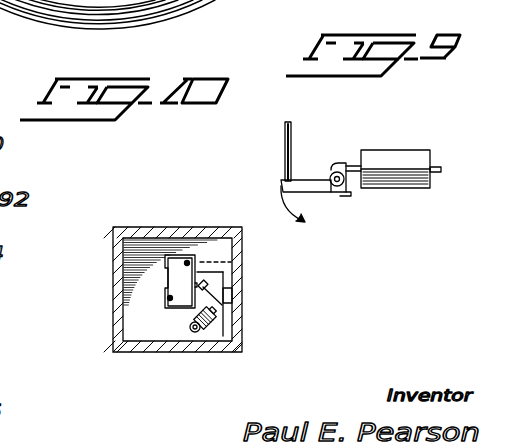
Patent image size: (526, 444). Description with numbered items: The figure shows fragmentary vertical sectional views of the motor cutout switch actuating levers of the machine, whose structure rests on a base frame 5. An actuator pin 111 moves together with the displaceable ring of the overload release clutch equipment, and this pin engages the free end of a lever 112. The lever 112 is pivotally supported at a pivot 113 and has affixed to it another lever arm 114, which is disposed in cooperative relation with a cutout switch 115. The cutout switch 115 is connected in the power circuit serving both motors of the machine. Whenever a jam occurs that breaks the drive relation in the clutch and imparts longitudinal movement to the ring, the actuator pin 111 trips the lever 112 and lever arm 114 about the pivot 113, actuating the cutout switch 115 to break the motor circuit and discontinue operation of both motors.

In FIG. 10, the base frame 5 is at (173, 236).
In FIG. 9, the actuator pin 111 is at (290, 145).
In FIG. 9, the lever 112 is at (324, 190).
In FIG. 9, the pivot 113 is at (333, 178).
In FIG. 10, the pivot 113 is at (190, 326).
In FIG. 10, the lever arm 114 is at (197, 334).
In FIG. 10, the cutout switch 115 is at (180, 298).